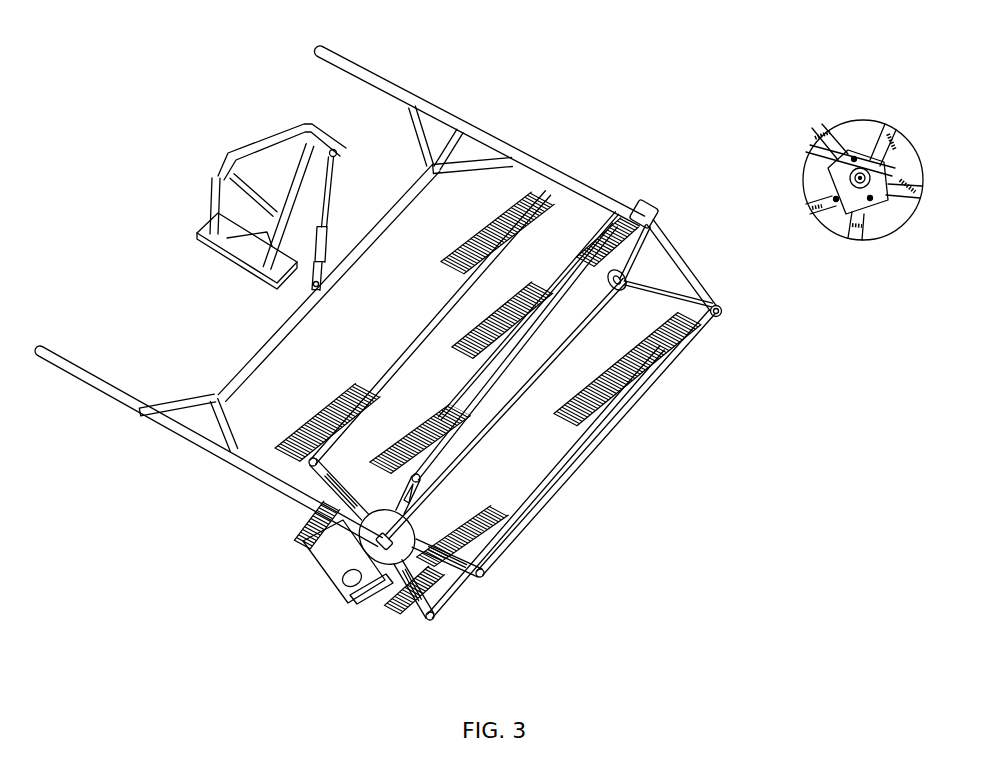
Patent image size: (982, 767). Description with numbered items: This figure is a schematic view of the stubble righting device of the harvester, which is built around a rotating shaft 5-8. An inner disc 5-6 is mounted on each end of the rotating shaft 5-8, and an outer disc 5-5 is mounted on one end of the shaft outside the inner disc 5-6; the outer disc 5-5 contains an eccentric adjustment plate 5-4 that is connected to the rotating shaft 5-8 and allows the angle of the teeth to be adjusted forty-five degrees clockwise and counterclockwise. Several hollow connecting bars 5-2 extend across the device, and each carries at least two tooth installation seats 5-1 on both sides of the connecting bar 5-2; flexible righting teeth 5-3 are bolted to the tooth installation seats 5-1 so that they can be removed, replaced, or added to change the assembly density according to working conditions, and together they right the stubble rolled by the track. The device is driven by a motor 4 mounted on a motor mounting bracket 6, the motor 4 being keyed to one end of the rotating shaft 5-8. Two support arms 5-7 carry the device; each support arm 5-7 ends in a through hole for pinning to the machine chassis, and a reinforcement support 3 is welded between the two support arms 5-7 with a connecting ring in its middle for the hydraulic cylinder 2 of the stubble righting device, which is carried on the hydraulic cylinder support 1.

The hydraulic cylinder support 1 is at (240, 167).
The hydraulic cylinder of stubble righting device 2 is at (343, 150).
The reinforcement support 3 is at (198, 417).
The motor 4 is at (333, 545).
The motor mounting bracket 6 is at (367, 588).
The tooth installation seat 5-1 is at (590, 235).
The connecting bar 5-2 is at (715, 310).
The righting tooth 5-3 is at (622, 352).
The eccentric adjustment plate 5-4 is at (860, 178).
The outer disc 5-5 is at (638, 207).
The inner disc 5-6 is at (418, 598).
The support arm 5-7 is at (267, 480).
The rotating shaft 5-8 is at (465, 450).